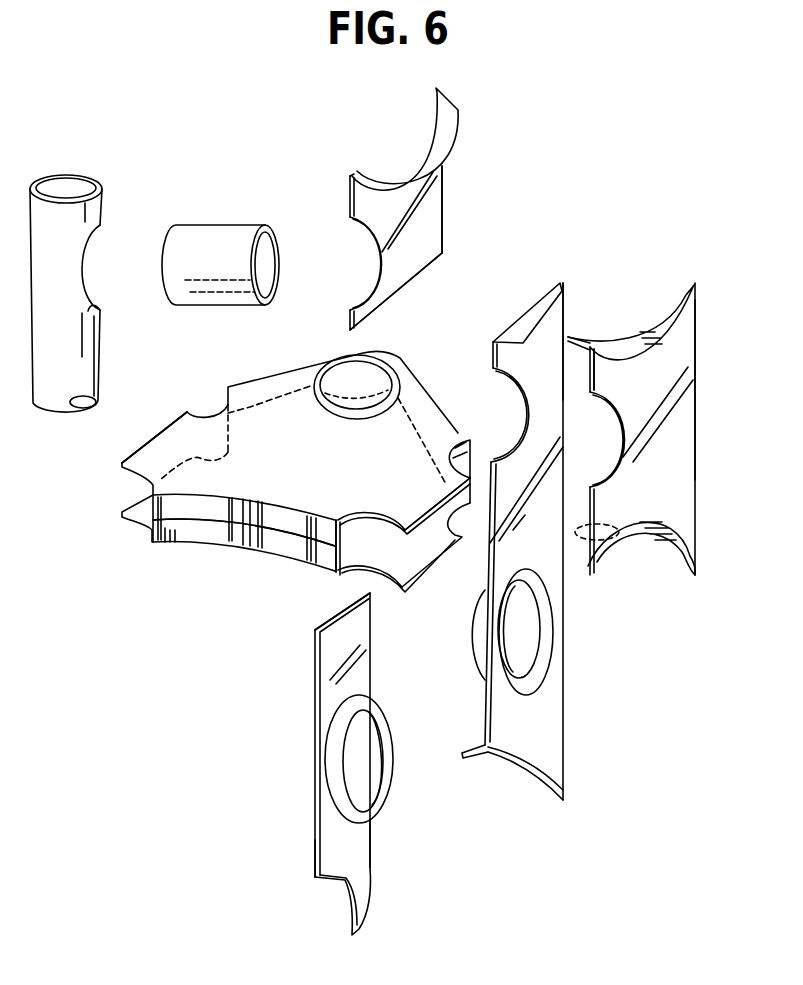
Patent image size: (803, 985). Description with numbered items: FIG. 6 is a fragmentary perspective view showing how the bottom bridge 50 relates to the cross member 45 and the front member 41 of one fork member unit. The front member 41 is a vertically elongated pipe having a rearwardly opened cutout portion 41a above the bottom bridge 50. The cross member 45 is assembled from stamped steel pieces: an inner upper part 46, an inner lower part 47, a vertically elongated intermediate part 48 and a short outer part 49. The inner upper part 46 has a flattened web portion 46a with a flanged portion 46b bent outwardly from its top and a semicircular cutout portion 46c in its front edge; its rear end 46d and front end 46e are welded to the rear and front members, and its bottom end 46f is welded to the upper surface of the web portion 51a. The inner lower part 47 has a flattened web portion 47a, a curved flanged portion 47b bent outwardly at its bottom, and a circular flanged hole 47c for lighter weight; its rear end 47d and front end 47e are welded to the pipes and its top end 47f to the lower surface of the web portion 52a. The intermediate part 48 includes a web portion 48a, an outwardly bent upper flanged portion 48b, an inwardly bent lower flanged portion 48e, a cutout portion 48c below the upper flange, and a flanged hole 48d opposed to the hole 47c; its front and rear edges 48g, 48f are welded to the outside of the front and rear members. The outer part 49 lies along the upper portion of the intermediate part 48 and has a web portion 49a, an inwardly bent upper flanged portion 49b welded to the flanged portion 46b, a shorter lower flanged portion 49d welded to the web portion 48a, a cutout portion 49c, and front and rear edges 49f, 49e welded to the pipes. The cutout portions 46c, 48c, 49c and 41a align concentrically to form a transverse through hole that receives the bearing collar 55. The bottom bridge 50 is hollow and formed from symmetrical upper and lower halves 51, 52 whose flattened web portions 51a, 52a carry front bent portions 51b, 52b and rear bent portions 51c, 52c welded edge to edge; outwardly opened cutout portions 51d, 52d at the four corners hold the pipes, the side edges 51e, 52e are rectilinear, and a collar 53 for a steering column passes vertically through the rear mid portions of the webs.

The front member 41 is at (80, 261).
The cutout portion 41a is at (86, 262).
The bearing collar 55 is at (215, 245).
The cross member 45 is at (669, 244).
The inner upper part 46 is at (421, 208).
The web portion 46a is at (432, 260).
The flanged portion 46b is at (425, 143).
The semicircular cutout portion 46c is at (380, 258).
The rear end 46d is at (442, 172).
The front end 46e is at (340, 197).
The bottom end 46f is at (400, 295).
The inner lower part 47 is at (328, 785).
The web portion 47a is at (330, 648).
The curved flanged portion 47b is at (370, 923).
The circular flanged hole 47c is at (355, 765).
The rear end 47d is at (372, 867).
The front end 47e is at (316, 868).
The top end 47f is at (315, 618).
The intermediate part 48 is at (556, 554).
The web portion 48a is at (552, 333).
The upper flanged portion 48b is at (523, 322).
The cutout portion 48c is at (524, 414).
The flanged hole 48d is at (550, 653).
The rear edge 48f is at (567, 627).
The flanged portion 48e is at (531, 778).
The front edge 48g is at (470, 745).
The outer part 49 is at (676, 405).
The web portion 49a is at (690, 368).
The upper flanged portion 49b is at (657, 328).
The cutout portion 49c is at (605, 437).
The lower flanged portion 49d is at (685, 542).
The rear edge 49e is at (696, 397).
The front edge 49f is at (590, 526).
The bottom bridge 50 is at (258, 513).
The upper half 51 is at (268, 493).
The web portion 51a is at (257, 482).
The front bent portion 51b is at (197, 505).
The rear bent portion 51c is at (265, 403).
The cutout portions 51d is at (215, 412).
The side edges 51e is at (419, 535).
The lower half 52 is at (244, 545).
The web portion 52a is at (323, 545).
The front bent portion 52b is at (247, 517).
The rear bent portion 52c is at (253, 408).
The cutout portions 52d is at (140, 520).
The side edges 52e is at (150, 440).
The collar 53 is at (328, 368).